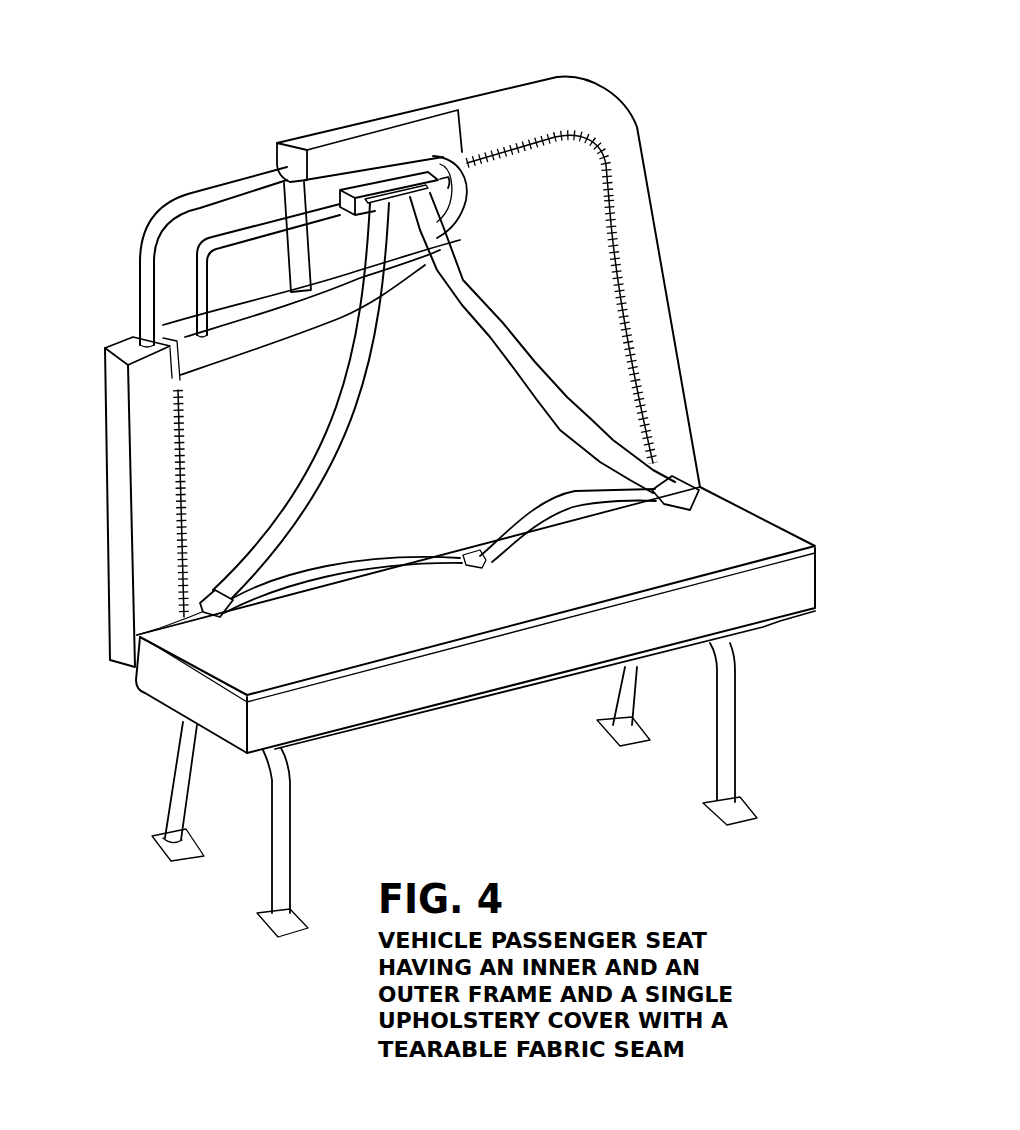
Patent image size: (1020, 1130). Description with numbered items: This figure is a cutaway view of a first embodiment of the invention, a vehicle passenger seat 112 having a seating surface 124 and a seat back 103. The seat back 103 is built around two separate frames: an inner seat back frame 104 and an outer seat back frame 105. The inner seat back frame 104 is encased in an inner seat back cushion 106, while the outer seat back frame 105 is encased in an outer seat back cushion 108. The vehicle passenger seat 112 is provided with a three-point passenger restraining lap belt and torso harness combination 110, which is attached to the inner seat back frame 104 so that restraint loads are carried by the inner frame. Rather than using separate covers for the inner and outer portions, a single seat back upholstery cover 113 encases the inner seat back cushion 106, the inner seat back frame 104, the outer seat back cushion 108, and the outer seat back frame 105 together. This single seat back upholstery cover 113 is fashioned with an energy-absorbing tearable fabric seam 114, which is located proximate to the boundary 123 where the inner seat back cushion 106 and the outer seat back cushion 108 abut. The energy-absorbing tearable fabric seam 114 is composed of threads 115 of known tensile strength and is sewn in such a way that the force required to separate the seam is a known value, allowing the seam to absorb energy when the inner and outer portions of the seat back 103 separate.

The seat back 103 is at (423, 437).
The inner seat back frame 104 is at (267, 217).
The outer seat back frame 105 is at (165, 200).
The inner seat back cushion 106 is at (252, 323).
The outer seat back cushion 108 is at (135, 348).
The three-point passenger restraining lap belt and torso harness combination 110 is at (488, 335).
The vehicle passenger seat 112 is at (743, 512).
The single seat back upholstery cover 113 is at (178, 520).
The energy-absorbing tearable fabric seam 114 is at (633, 332).
The threads 115 is at (612, 170).
The boundary 123 is at (455, 150).
The seating surface 124 is at (690, 558).